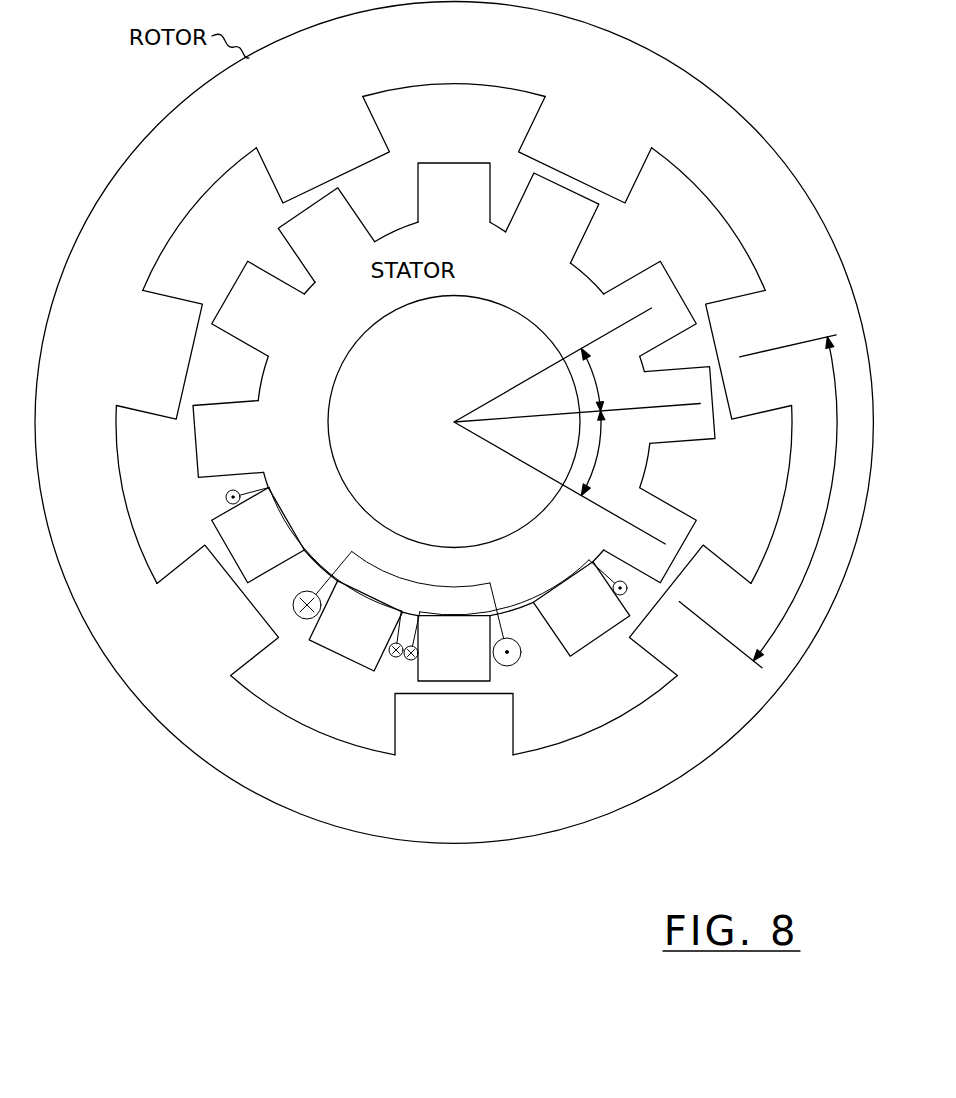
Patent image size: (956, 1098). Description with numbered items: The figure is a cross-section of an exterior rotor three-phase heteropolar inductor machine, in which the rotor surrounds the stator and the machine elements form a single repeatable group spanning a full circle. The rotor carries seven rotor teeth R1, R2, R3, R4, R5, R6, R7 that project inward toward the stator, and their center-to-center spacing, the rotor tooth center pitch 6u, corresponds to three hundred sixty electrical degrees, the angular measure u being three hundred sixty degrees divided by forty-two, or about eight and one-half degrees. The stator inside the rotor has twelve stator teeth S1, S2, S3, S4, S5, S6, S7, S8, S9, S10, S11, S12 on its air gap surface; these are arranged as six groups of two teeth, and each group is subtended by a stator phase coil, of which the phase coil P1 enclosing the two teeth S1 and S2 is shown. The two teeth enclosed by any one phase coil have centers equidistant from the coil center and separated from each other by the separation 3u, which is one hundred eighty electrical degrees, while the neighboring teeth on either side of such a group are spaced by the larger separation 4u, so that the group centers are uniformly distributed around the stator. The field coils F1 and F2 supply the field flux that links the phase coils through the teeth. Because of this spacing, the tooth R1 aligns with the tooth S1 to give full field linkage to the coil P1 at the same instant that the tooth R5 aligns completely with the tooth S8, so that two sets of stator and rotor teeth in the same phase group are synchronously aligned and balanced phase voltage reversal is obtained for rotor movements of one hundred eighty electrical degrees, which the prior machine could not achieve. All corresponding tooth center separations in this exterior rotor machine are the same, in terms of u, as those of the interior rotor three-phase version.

The rotor tooth R1 is at (454, 724).
The rotor tooth R2 is at (218, 610).
The rotor tooth R3 is at (159, 354).
The rotor tooth R4 is at (322, 150).
The rotor tooth R5 is at (585, 150).
The rotor tooth R6 is at (749, 354).
The rotor tooth R7 is at (691, 610).
The stator tooth S1 is at (454, 648).
The stator tooth S2 is at (355, 626).
The stator tooth S3 is at (258, 535).
The stator tooth S4 is at (228, 439).
The stator tooth S5 is at (258, 308).
The stator tooth S6 is at (326, 235).
The stator tooth S7 is at (454, 192).
The stator tooth S8 is at (552, 218).
The stator tooth S9 is at (650, 308).
The stator tooth S10 is at (679, 405).
The stator tooth S11 is at (650, 535).
The stator tooth S12 is at (581, 609).
The field coil F1 is at (527, 600).
The field coil F2 is at (291, 524).
The stator phase coil P1 is at (400, 576).
The stator tooth center separation 3u is at (608, 380).
The angular separation 4u is at (607, 453).
The rotor tooth center pitch 6u is at (758, 501).